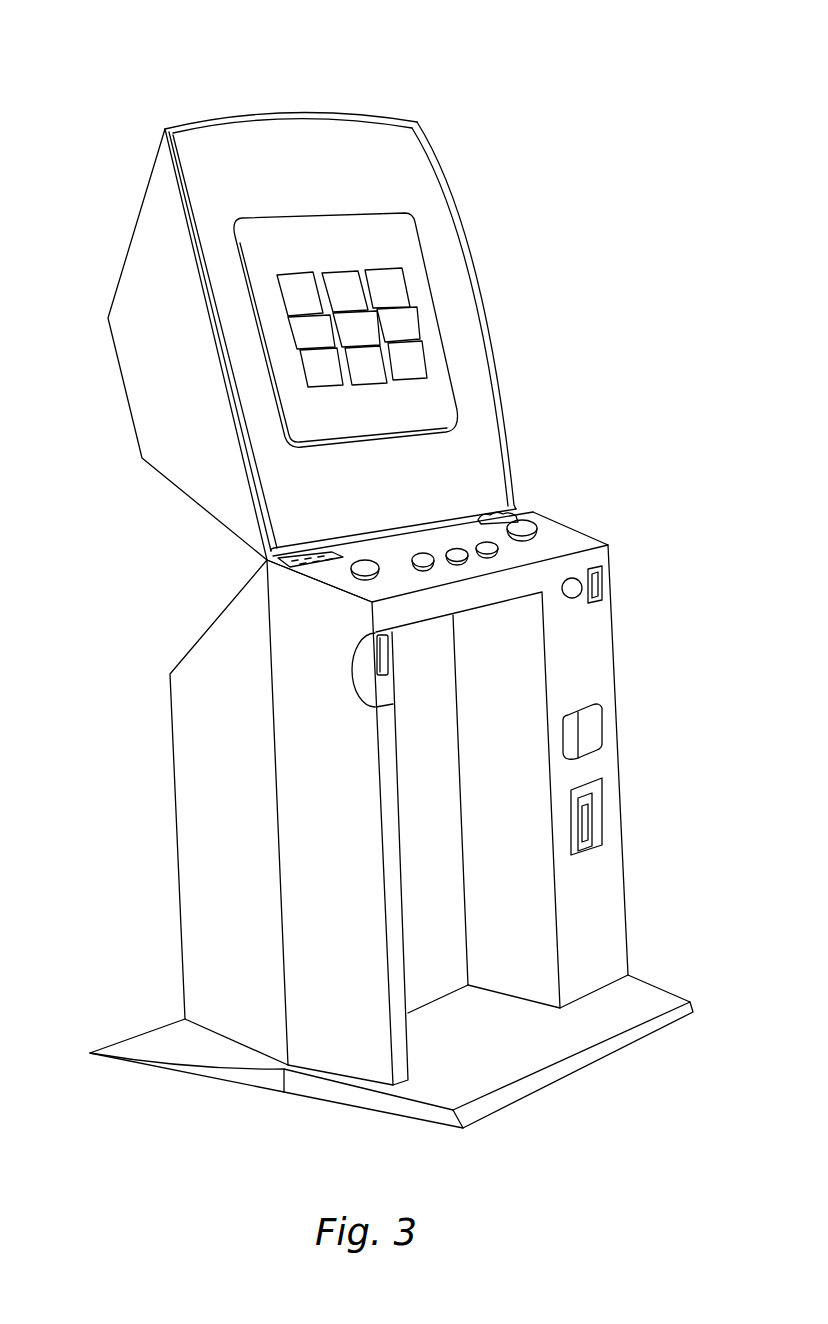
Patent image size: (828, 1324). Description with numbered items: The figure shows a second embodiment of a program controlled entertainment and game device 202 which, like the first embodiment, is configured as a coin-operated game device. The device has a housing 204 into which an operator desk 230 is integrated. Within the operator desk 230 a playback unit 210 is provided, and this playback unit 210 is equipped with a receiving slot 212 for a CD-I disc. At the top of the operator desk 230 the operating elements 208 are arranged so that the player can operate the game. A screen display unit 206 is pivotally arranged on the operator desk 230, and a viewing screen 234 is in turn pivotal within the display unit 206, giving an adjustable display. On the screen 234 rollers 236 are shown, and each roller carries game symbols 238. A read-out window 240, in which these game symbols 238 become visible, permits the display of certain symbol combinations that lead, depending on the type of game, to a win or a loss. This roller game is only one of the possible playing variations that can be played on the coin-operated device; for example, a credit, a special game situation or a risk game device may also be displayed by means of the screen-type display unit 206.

The program controlled entertainment and game device 202 is at (388, 90).
The housing 204 is at (200, 783).
The screen display unit 206 is at (437, 162).
The operating elements 208 is at (423, 553).
The playback unit 210 is at (602, 835).
The receiving slot 212 is at (602, 806).
The operator desk 230 is at (607, 907).
The viewing screen 234 is at (408, 251).
The rollers 236 is at (300, 273).
The game symbols 238 is at (402, 330).
The read-out window 240 is at (293, 333).